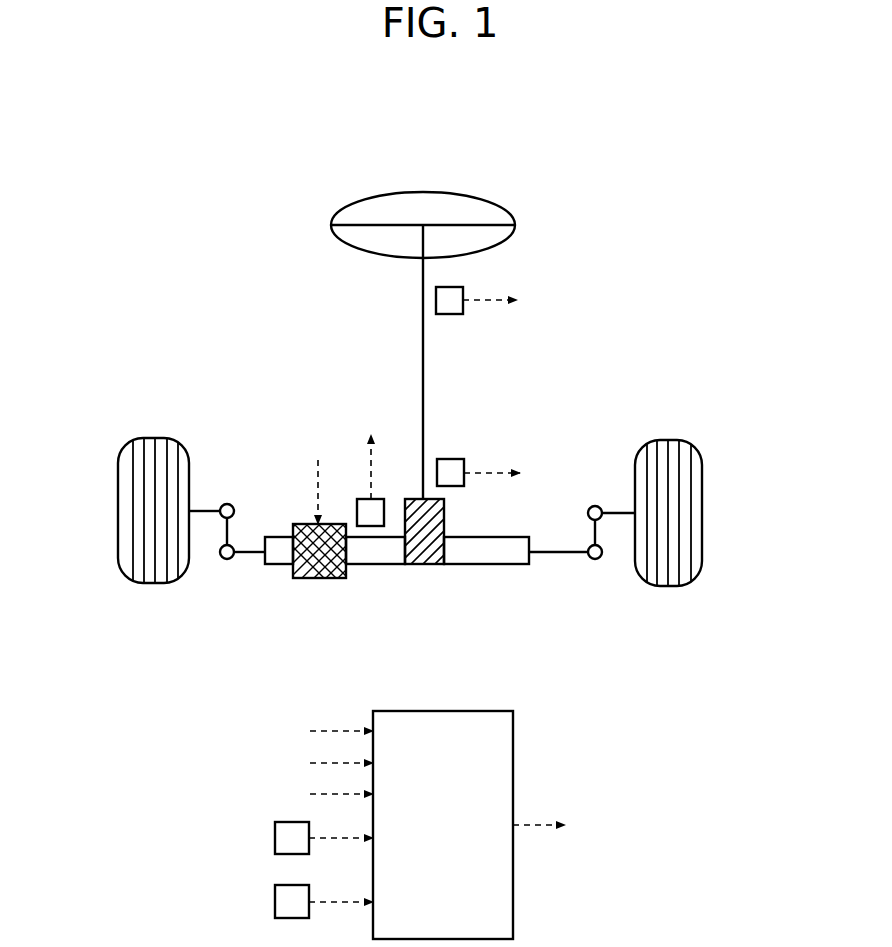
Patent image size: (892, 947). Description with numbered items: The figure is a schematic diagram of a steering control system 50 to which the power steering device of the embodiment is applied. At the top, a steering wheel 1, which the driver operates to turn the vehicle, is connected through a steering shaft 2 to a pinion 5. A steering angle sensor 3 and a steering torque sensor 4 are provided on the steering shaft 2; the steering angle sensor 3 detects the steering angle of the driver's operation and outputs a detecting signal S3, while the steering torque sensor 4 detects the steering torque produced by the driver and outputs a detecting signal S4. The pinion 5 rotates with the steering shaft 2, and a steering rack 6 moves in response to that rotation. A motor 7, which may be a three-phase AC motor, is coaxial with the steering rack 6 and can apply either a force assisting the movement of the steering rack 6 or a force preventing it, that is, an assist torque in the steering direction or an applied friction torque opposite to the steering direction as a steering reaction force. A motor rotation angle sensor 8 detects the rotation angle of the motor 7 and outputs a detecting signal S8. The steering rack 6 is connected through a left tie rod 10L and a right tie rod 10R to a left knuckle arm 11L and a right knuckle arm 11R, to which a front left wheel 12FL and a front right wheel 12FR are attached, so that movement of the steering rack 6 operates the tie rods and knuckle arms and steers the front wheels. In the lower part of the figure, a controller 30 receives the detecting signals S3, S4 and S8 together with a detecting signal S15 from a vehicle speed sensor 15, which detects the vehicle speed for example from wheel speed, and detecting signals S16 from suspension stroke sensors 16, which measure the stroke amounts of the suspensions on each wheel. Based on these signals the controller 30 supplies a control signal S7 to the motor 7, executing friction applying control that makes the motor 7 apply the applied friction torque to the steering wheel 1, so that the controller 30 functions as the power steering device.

The steering control system 50 is at (435, 110).
The steering wheel 1 is at (423, 192).
The steering shaft 2 is at (423, 313).
The steering angle sensor 3 is at (455, 314).
The detecting signal S3 is at (495, 300).
The steering torque sensor 4 is at (455, 486).
The detecting signal S4 is at (494, 473).
The pinion 5 is at (425, 564).
The steering rack 6 is at (494, 564).
The motor 7 is at (320, 578).
The control signal S7 is at (318, 491).
The motor rotation angle sensor 8 is at (381, 499).
The detecting signal S8 is at (371, 483).
The tie rod 10L is at (252, 552).
The tie rod 10R is at (556, 552).
The knuckle arm 11L is at (205, 511).
The knuckle arm 11R is at (617, 513).
The front left wheel 12FL is at (152, 438).
The front right wheel 12FR is at (666, 440).
The controller 30 is at (440, 711).
The vehicle speed sensor 15 is at (275, 838).
The detecting signal S15 is at (339, 838).
The suspension stroke sensor 16 is at (275, 902).
The detecting signal S16 is at (339, 902).